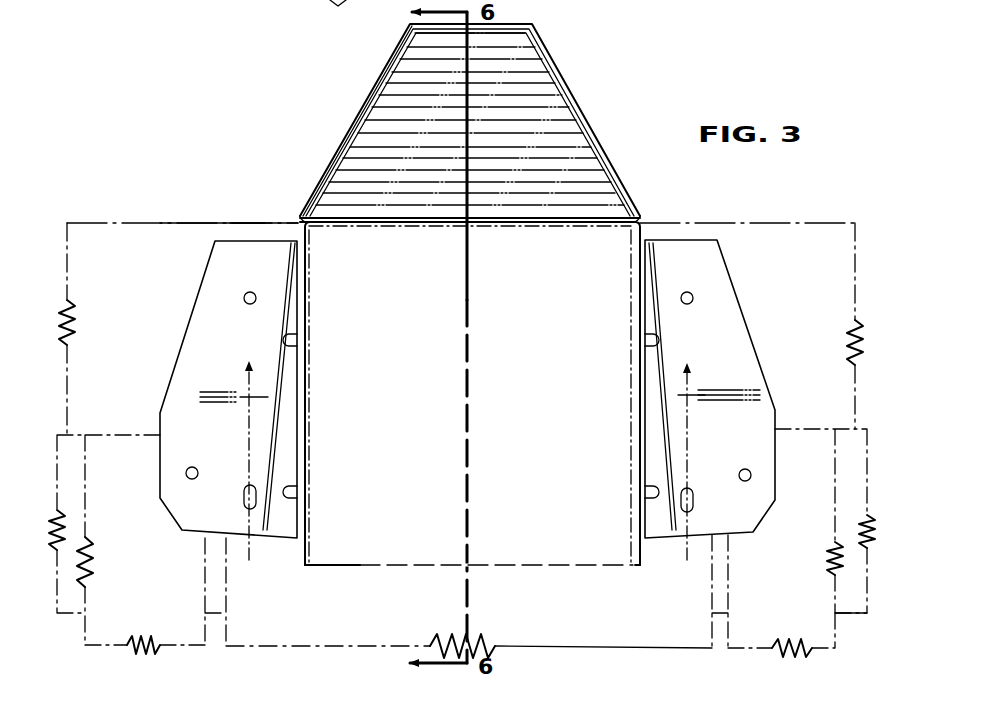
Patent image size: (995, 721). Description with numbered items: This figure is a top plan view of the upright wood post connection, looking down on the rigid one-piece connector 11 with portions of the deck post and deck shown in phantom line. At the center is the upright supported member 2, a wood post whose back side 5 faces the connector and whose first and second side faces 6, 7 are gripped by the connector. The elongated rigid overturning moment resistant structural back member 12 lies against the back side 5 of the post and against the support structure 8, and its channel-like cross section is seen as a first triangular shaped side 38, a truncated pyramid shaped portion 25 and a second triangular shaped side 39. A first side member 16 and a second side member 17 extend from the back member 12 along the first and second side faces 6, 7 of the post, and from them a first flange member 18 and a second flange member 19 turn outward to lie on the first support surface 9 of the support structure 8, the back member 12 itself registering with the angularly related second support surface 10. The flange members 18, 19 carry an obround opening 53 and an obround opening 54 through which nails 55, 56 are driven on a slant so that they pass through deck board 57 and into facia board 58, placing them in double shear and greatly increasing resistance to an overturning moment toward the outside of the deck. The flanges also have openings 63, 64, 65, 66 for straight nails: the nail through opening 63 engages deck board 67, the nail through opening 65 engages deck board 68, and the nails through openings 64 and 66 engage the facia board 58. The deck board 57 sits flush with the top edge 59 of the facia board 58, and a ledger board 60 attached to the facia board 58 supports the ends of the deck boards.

The upright supported member 2 is at (362, 572).
The back side 5 is at (425, 226).
The first side face 6 is at (640, 553).
The second side face 7 is at (305, 550).
The support structure 8 is at (150, 220).
The first support surface 9 is at (815, 467).
The second support surface 10 is at (215, 223).
The rigid one-piece connector 11 is at (645, 212).
The elongated rigid overturning moment resistant structural back member 12 is at (595, 128).
The first side member 16 is at (640, 395).
The second side member 17 is at (303, 395).
The first flange member 18 is at (737, 325).
The second flange member 19 is at (205, 307).
The truncated pyramid shaped portion 25 is at (498, 102).
The first triangular shaped side 38 is at (566, 84).
The second triangular shaped side 39 is at (352, 122).
The obround opening 53 is at (693, 490).
The obround opening 54 is at (244, 490).
The nail 55 is at (697, 408).
The nail 56 is at (237, 395).
The deck board 57 is at (283, 646).
The facia board 58 is at (247, 220).
The top edge 59 is at (130, 376).
The ledger board 60 is at (850, 615).
The opening 63 is at (188, 468).
The opening 64 is at (250, 292).
The opening 65 is at (748, 469).
The opening 66 is at (693, 294).
The deck board 67 is at (173, 648).
The deck board 68 is at (760, 648).